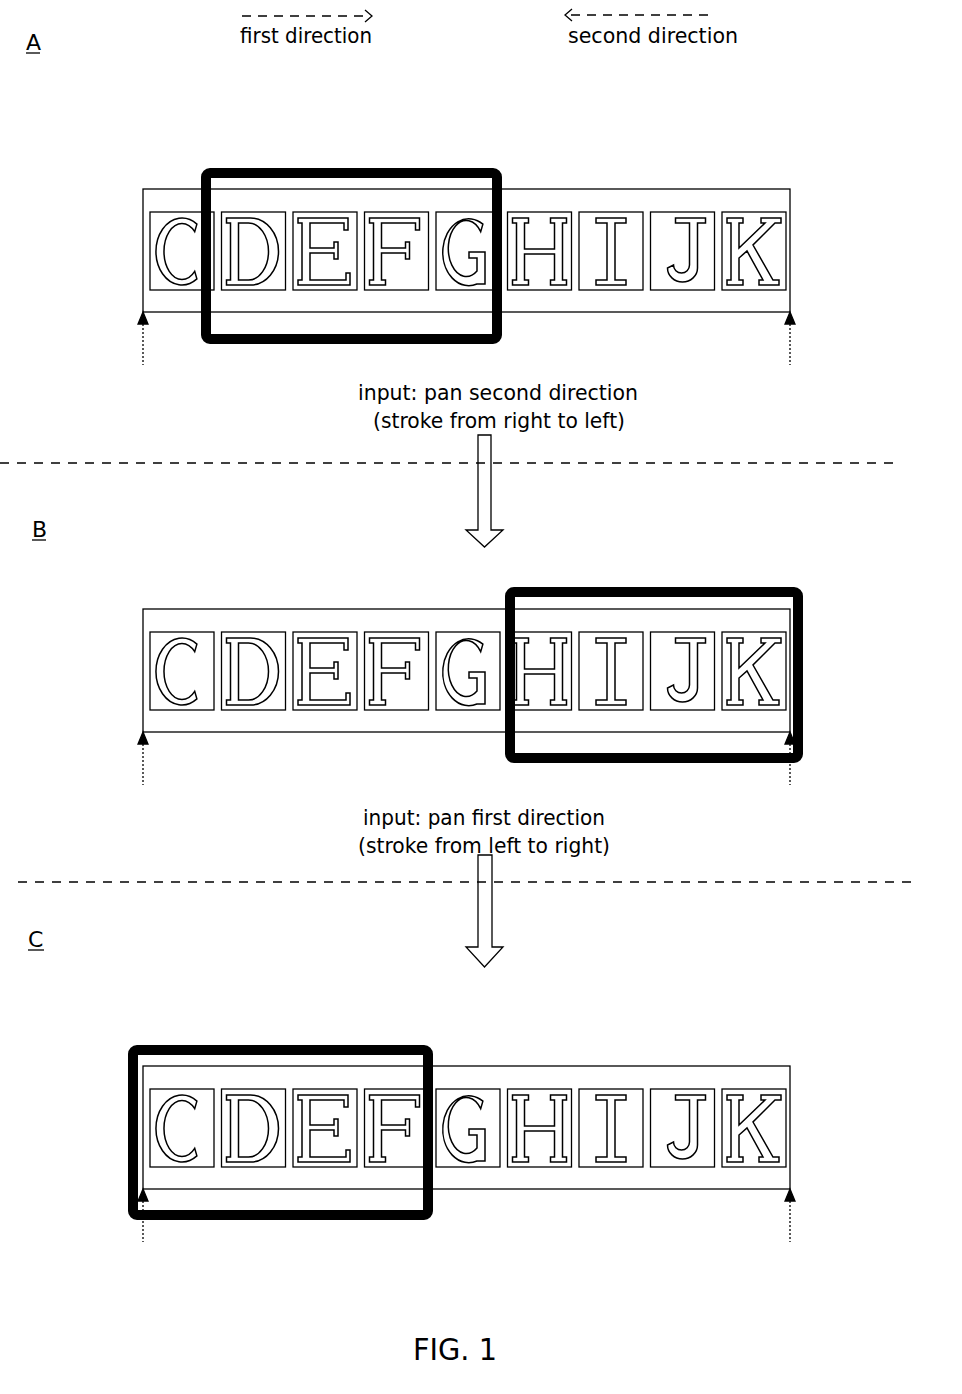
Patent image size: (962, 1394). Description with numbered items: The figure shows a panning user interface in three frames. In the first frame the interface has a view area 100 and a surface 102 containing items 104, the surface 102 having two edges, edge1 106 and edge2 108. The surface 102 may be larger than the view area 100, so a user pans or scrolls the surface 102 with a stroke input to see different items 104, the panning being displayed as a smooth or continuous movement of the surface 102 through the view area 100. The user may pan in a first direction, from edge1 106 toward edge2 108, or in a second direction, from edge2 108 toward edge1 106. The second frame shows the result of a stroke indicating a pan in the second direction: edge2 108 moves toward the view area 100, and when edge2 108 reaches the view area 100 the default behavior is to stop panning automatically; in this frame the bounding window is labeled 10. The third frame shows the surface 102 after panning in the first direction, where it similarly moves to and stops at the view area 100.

The view area 100 is at (482, 166).
The viewport window 10 is at (803, 585).
The surface 102 is at (143, 189).
The items 104 is at (242, 200).
The edge1 106 is at (228, 389).
The edge2 108 is at (869, 389).